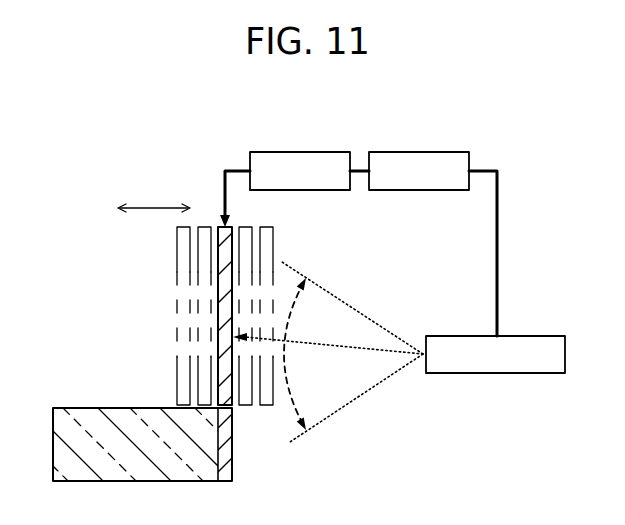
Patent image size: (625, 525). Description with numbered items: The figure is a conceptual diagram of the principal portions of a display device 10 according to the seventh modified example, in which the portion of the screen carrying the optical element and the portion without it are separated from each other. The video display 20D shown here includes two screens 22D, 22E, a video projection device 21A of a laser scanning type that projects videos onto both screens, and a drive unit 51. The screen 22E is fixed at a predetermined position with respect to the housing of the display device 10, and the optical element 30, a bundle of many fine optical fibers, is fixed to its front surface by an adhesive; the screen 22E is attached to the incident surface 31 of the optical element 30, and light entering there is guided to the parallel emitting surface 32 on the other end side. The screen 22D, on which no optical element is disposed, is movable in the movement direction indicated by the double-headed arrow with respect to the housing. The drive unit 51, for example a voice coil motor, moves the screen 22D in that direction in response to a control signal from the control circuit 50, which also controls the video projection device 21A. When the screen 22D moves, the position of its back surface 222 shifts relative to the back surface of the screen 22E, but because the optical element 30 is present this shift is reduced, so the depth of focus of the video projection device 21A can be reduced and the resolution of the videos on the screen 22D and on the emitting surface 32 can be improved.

The display device 10 is at (77, 238).
The drive unit 51 is at (302, 152).
The control circuit 50 is at (418, 152).
The video projection device 21A is at (535, 336).
The video display 20D is at (388, 399).
The back surface 222 is at (218, 259).
The screen 22D is at (230, 229).
The screen 22E is at (226, 427).
The optical element 30 is at (137, 417).
The incident surface 31 is at (245, 444).
The emitting surface 32 is at (53, 447).